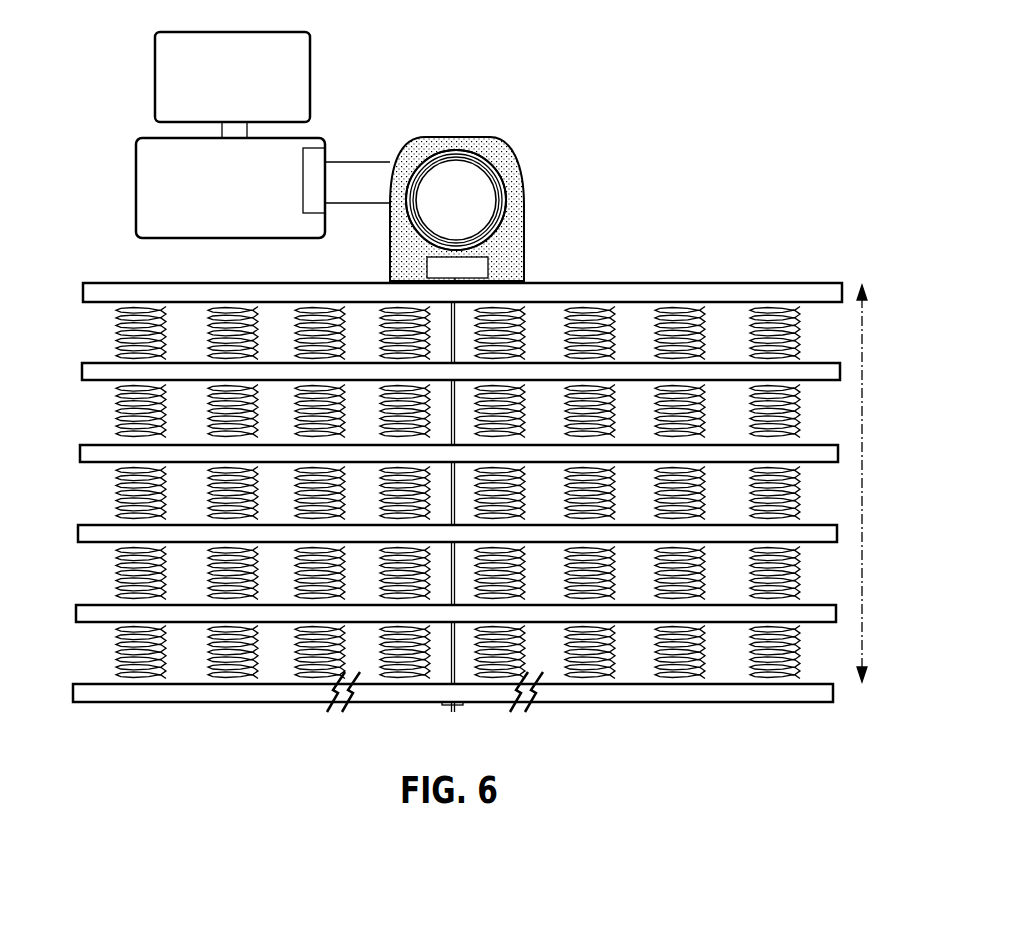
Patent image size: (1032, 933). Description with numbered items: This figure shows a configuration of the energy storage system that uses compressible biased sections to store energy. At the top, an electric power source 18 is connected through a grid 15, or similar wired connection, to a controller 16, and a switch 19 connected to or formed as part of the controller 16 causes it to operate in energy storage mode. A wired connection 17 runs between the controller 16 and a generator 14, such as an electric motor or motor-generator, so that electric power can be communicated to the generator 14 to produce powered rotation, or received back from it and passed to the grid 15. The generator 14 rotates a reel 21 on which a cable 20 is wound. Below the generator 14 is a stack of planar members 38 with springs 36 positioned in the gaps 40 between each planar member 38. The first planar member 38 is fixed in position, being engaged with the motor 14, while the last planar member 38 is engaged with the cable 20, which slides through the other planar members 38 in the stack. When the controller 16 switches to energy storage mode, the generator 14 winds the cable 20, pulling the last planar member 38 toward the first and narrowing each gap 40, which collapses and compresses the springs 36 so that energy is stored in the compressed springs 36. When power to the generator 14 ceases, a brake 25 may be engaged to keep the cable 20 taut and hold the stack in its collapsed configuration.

The generator 14 is at (495, 137).
The grid 15 is at (222, 130).
The controller 16 is at (188, 237).
The wired connection 17 is at (377, 162).
The electric power source 18 is at (313, 67).
The switch 19 is at (313, 167).
The cable 20 is at (456, 312).
The reel 21 is at (500, 210).
The brake 25 is at (427, 263).
The spring 36 is at (123, 573).
The planar member 38 is at (731, 292).
The gap 40 is at (97, 335).